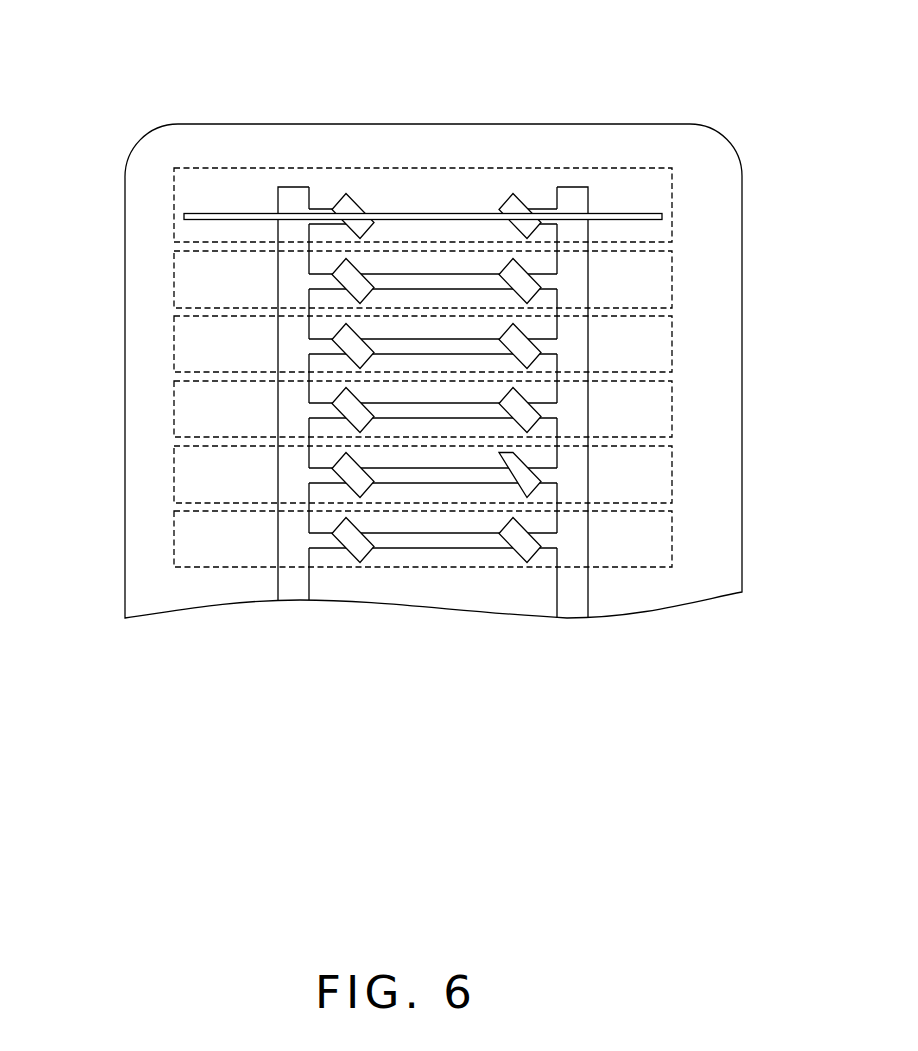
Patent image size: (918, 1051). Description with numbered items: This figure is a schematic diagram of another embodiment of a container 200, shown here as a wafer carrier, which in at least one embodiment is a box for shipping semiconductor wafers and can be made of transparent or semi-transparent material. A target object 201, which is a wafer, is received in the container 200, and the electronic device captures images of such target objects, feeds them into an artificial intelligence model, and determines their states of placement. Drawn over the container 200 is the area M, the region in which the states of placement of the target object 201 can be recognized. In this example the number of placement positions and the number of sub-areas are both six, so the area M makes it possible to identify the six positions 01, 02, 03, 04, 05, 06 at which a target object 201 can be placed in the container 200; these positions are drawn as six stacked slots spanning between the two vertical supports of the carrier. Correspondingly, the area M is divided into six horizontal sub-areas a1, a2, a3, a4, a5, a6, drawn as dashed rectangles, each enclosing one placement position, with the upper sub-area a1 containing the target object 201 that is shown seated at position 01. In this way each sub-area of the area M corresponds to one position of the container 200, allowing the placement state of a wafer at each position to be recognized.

The container 200 is at (455, 27).
The area M is at (672, 145).
The target object 201 is at (652, 215).
The position 01 is at (513, 207).
The position 02 is at (522, 281).
The position 03 is at (522, 346).
The position 04 is at (522, 410).
The position 05 is at (522, 475).
The position 06 is at (522, 540).
The sub-area a1 is at (174, 205).
The sub-area a2 is at (174, 280).
The sub-area a3 is at (174, 344).
The sub-area a4 is at (174, 409).
The sub-area a5 is at (174, 474).
The sub-area a6 is at (174, 539).